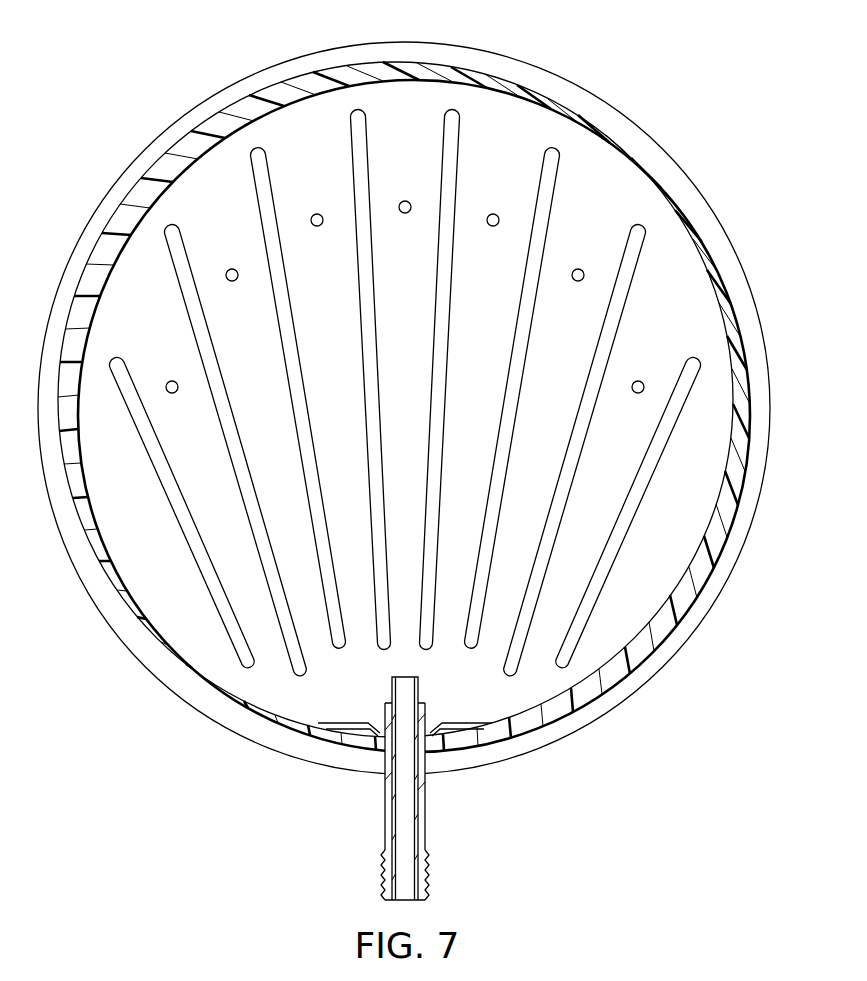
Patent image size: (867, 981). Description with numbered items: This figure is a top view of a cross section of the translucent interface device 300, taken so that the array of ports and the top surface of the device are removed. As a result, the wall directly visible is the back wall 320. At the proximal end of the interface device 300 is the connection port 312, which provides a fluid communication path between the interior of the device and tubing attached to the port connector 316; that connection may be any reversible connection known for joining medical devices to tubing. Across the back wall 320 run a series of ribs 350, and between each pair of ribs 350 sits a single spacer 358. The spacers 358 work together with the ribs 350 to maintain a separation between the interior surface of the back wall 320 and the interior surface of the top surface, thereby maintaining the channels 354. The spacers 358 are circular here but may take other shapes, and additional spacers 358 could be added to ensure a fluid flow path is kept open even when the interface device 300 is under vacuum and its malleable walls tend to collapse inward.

The interface device 300 is at (213, 97).
The connection port 312 is at (425, 805).
The port connector 316 is at (430, 865).
The back wall 320 is at (310, 117).
The ribs 350 is at (448, 112).
The channels 354 is at (505, 113).
The spacers 358 is at (641, 379).